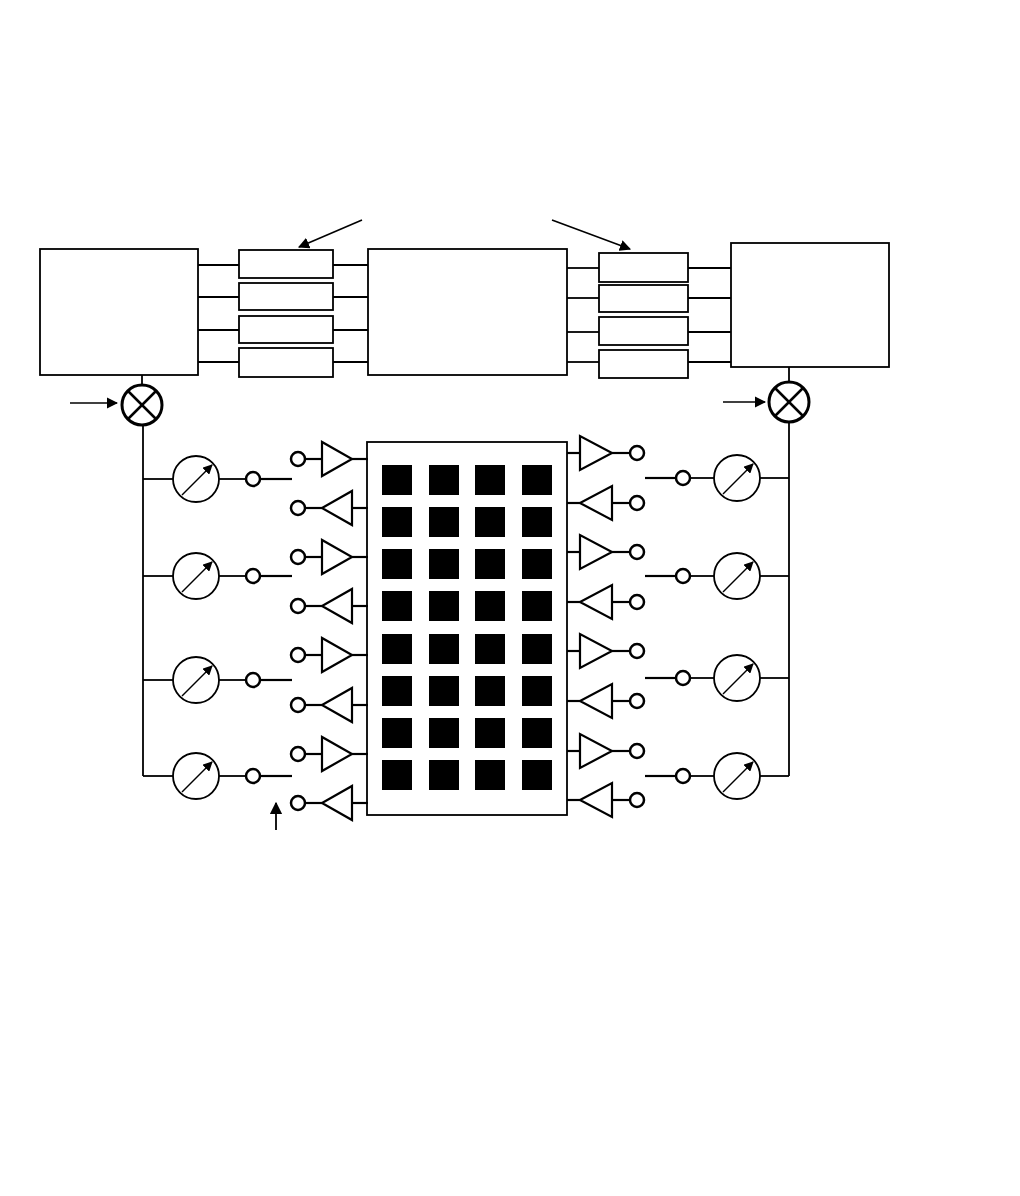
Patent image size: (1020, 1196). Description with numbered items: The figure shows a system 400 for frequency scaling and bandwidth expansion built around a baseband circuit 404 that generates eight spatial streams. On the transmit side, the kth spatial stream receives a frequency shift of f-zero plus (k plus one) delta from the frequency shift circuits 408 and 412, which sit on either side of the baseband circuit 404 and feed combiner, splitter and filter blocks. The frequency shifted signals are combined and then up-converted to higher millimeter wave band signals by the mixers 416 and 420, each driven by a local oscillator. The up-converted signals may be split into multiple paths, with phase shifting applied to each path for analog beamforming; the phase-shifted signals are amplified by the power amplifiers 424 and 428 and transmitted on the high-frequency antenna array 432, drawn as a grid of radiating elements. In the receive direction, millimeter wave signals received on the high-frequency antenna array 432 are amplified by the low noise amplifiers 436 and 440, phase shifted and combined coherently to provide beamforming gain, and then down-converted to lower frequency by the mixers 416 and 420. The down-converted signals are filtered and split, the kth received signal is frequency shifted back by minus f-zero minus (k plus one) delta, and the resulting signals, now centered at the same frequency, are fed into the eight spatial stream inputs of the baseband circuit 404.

The system 400 is at (457, 31).
The baseband circuit 404 is at (392, 250).
The frequency shift circuit 408 is at (275, 248).
The frequency shift circuit 412 is at (642, 252).
The mixer 416 is at (130, 423).
The mixer 420 is at (802, 422).
The power amplifier 424 is at (318, 455).
The power amplifier 428 is at (597, 810).
The high-frequency antenna array 432 is at (547, 818).
The low noise amplifier 436 is at (587, 437).
The low noise amplifier 440 is at (339, 812).